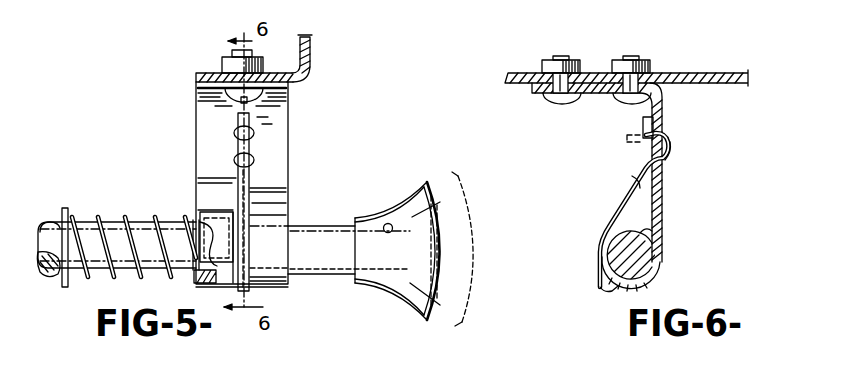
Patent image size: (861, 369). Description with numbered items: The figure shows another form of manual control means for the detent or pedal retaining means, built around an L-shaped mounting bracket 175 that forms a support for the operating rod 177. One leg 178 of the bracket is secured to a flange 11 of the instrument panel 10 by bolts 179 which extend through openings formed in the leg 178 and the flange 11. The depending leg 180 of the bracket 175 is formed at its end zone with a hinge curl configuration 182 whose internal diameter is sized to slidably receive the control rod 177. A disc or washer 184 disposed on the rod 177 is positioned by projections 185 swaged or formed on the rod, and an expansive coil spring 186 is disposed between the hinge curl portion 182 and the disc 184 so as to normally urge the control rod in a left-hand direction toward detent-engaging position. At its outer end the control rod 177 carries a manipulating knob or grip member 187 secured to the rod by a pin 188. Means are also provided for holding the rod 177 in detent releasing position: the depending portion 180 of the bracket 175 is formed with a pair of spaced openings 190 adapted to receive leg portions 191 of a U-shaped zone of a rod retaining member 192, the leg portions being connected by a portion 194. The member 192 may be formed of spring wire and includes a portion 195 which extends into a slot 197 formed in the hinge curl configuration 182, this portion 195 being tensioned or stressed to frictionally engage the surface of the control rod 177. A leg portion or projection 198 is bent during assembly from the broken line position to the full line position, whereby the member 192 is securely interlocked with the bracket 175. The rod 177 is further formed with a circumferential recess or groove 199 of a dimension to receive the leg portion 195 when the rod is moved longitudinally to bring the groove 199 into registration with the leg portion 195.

In FIG. 5, the instrument panel 10 is at (309, 52).
In FIG. 5, the flange 11 is at (199, 73).
In FIG. 6, the flange 11 is at (523, 86).
In FIG. 5, the L-shaped mounting bracket 175 is at (293, 122).
In FIG. 5, the operating rod 177 is at (312, 270).
In FIG. 6, the operating rod 177 is at (638, 254).
In FIG. 5, the leg 178 is at (290, 92).
In FIG. 6, the leg 178 is at (584, 88).
In FIG. 6, the bolts 179 is at (613, 99).
In FIG. 6, the depending leg 180 is at (663, 200).
In FIG. 6, the hinge curl configuration 182 is at (641, 283).
In FIG. 5, the disc or washer 184 is at (85, 184).
In FIG. 5, the projections 185 is at (53, 272).
In FIG. 5, the expansive coil spring 186 is at (133, 214).
In FIG. 5, the manipulating knob or grip member 187 is at (384, 288).
In FIG. 5, the pin 188 is at (390, 223).
In FIG. 5, the spaced openings 190 is at (234, 158).
In FIG. 6, the leg portions 191 is at (661, 133).
In FIG. 6, the rod retaining member 192 is at (632, 175).
In FIG. 6, the connecting portion 194 is at (671, 152).
In FIG. 5, the portion 195 is at (234, 200).
In FIG. 6, the portion 195 is at (619, 210).
In FIG. 5, the slot 197 is at (251, 232).
In FIG. 6, the slot 197 is at (617, 279).
In FIG. 6, the leg portion or projection 198 is at (642, 122).
In FIG. 5, the circumferential recess or groove 199 is at (203, 212).
In FIG. 6, the circumferential recess or groove 199 is at (649, 228).